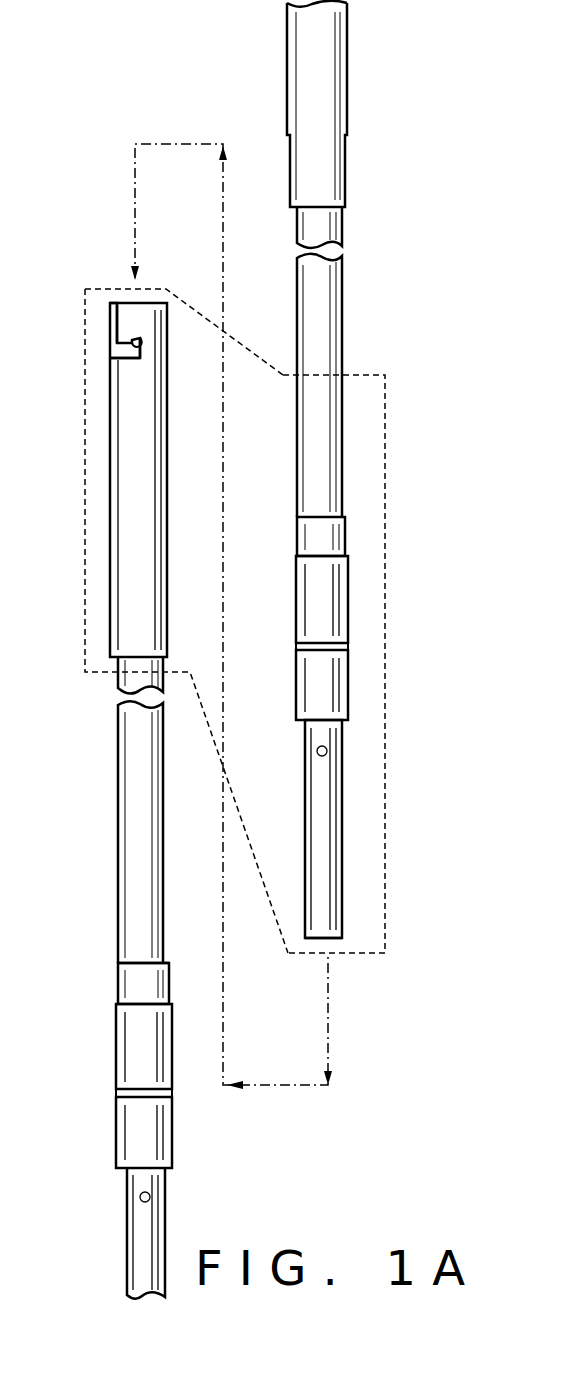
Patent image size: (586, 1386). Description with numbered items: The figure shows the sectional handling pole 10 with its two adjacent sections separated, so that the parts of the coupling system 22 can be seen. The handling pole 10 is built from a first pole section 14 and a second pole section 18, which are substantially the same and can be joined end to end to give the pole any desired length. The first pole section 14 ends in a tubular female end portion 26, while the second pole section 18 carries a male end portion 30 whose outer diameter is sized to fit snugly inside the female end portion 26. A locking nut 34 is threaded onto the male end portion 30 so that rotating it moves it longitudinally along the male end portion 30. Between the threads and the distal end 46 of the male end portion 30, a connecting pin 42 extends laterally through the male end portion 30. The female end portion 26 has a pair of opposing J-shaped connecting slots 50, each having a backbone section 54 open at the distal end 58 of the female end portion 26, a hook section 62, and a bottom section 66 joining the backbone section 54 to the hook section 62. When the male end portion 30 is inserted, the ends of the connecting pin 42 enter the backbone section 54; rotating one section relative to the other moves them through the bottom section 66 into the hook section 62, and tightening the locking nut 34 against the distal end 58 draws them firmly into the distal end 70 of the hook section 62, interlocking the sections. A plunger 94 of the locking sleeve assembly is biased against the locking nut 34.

The sectional handling pole 10 is at (165, 90).
The first pole section 14 is at (52, 600).
The second pole section 18 is at (408, 418).
The coupling system 22 is at (84, 415).
The tubular female end portion 26 is at (125, 513).
The male end portion 30 is at (142, 1272).
The locking nut 34 is at (150, 1137).
The connecting pin 42 is at (140, 1197).
The distal end 46 is at (340, 930).
The J-shaped connecting slot 50 is at (104, 319).
The backbone section 54 is at (114, 313).
The distal end 58 is at (122, 300).
The hook section 62 is at (138, 345).
The bottom section 66 is at (122, 357).
The distal end of hook section 70 is at (145, 290).
The plunger 94 is at (324, 645).